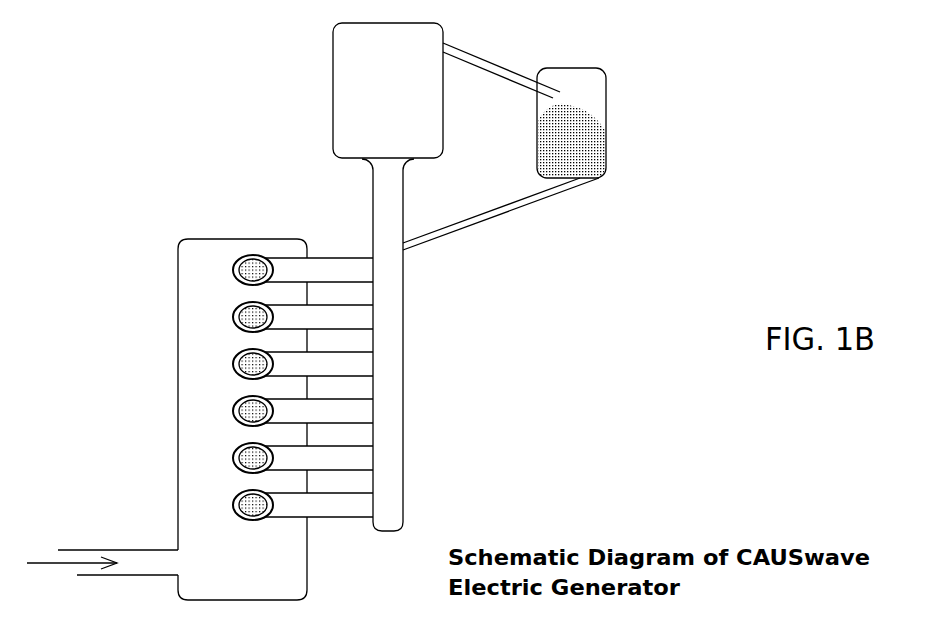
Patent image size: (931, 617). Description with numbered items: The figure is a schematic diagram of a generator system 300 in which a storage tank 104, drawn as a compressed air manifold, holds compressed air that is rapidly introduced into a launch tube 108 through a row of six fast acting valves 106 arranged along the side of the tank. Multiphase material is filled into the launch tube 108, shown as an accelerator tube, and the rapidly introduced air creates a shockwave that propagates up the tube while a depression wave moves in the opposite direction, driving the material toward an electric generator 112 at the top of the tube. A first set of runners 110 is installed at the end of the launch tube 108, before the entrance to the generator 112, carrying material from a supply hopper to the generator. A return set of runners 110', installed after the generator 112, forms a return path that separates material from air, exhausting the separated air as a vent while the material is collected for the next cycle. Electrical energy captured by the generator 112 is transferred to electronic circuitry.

The generator system 300 is at (122, 112).
The storage tank 104 is at (173, 454).
The fast acting valves 106 is at (234, 280).
The launch tube 108 is at (410, 366).
The first set of runners 110 is at (501, 223).
The return set of runners 110' is at (552, 60).
The electric generator 112 is at (310, 90).